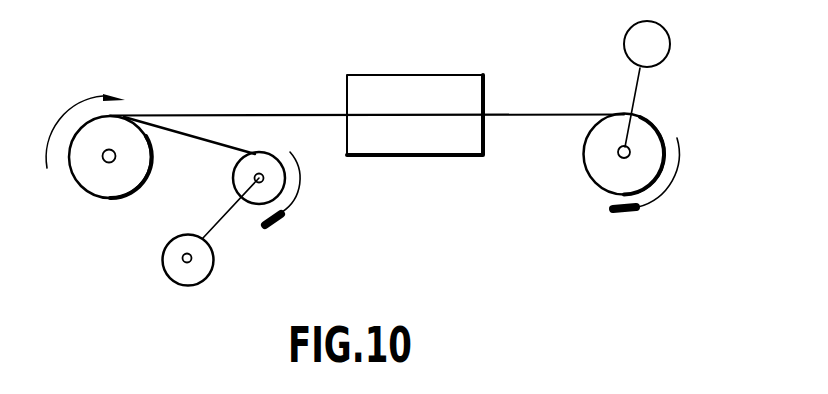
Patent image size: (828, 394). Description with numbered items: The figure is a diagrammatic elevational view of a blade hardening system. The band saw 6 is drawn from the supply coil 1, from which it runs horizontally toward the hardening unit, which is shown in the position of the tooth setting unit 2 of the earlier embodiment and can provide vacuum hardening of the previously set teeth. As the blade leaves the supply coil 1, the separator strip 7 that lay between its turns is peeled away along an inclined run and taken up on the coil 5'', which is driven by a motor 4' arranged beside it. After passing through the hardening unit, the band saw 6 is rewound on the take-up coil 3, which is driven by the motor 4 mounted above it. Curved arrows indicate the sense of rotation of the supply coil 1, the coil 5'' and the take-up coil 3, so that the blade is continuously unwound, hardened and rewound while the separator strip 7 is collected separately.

The supply coil 1 is at (85, 167).
The tooth setting unit 2 is at (482, 43).
The take-up coil 3 is at (601, 164).
The motor 4 is at (673, 84).
The motor 4' is at (177, 236).
The coil 5'' is at (237, 188).
The band saw 6 is at (247, 116).
The separator strip 7 is at (175, 135).